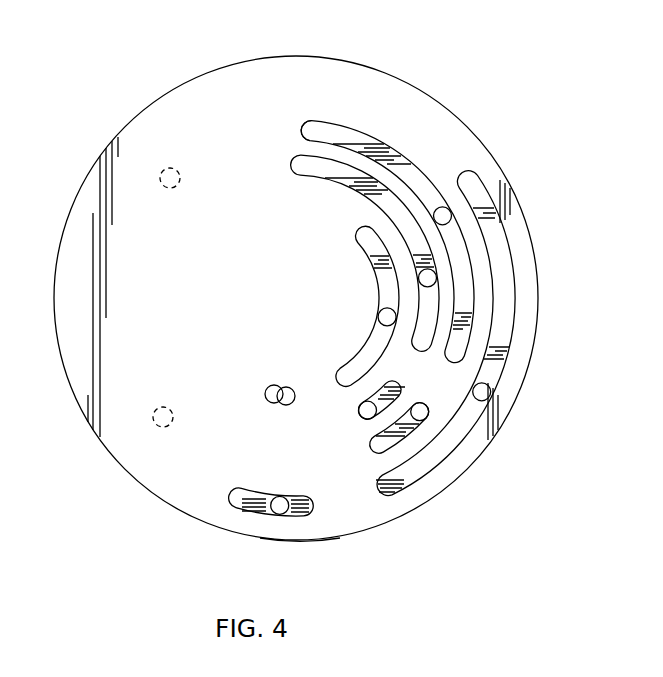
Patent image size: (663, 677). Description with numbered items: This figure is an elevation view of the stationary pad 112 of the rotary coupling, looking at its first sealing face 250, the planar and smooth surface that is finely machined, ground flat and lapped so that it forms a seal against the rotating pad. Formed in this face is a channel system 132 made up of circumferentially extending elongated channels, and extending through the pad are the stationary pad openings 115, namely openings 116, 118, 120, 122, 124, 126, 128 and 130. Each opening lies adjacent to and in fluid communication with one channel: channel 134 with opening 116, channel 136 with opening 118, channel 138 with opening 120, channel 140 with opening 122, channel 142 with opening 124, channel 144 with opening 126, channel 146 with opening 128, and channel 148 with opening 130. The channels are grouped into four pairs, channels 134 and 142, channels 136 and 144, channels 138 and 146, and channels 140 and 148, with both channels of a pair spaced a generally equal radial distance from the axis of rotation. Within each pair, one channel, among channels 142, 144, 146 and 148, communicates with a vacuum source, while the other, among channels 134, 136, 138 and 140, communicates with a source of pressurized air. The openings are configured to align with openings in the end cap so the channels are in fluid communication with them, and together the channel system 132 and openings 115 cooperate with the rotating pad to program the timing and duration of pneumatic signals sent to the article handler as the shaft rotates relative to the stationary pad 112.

The stationary pad 112 is at (190, 76).
The stationary pad openings 115 is at (405, 438).
The opening 116 is at (279, 517).
The opening 118 is at (287, 407).
The opening 120 is at (364, 418).
The opening 122 is at (416, 404).
The opening 124 is at (488, 398).
The opening 126 is at (378, 318).
The opening 128 is at (421, 266).
The opening 130 is at (442, 200).
The channel system 132 is at (297, 156).
The channel 134 is at (238, 510).
The channel 136 is at (266, 400).
The channel 138 is at (370, 392).
The channel 140 is at (377, 449).
The channel 142 is at (458, 444).
The channel 144 is at (363, 245).
The channel 146 is at (303, 176).
The channel 148 is at (412, 158).
The first sealing face 250 is at (137, 258).